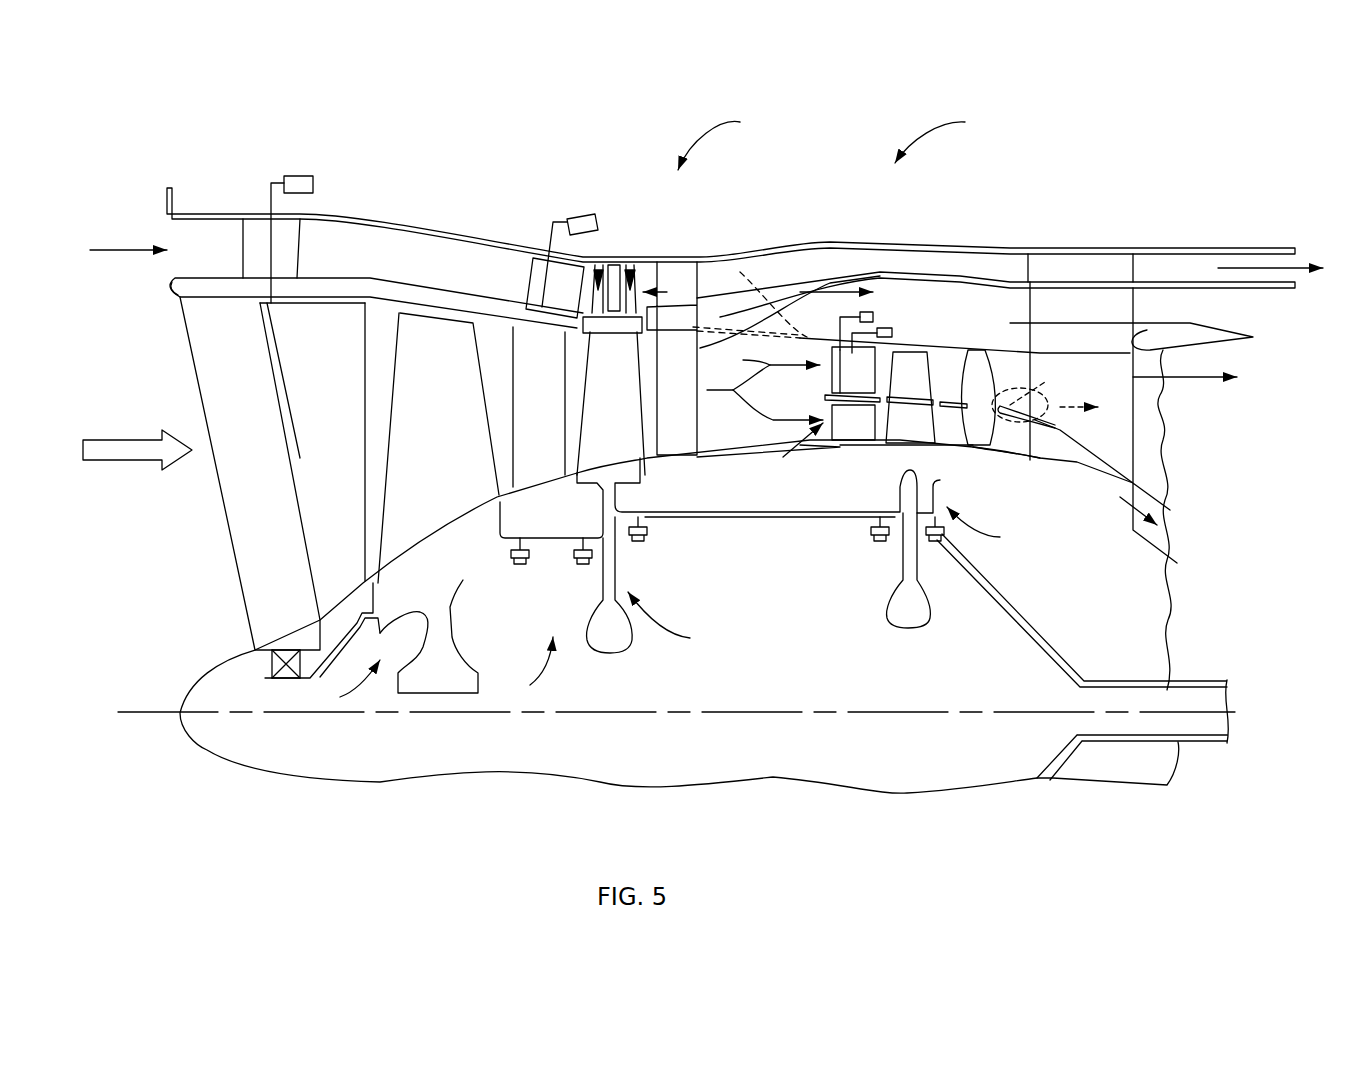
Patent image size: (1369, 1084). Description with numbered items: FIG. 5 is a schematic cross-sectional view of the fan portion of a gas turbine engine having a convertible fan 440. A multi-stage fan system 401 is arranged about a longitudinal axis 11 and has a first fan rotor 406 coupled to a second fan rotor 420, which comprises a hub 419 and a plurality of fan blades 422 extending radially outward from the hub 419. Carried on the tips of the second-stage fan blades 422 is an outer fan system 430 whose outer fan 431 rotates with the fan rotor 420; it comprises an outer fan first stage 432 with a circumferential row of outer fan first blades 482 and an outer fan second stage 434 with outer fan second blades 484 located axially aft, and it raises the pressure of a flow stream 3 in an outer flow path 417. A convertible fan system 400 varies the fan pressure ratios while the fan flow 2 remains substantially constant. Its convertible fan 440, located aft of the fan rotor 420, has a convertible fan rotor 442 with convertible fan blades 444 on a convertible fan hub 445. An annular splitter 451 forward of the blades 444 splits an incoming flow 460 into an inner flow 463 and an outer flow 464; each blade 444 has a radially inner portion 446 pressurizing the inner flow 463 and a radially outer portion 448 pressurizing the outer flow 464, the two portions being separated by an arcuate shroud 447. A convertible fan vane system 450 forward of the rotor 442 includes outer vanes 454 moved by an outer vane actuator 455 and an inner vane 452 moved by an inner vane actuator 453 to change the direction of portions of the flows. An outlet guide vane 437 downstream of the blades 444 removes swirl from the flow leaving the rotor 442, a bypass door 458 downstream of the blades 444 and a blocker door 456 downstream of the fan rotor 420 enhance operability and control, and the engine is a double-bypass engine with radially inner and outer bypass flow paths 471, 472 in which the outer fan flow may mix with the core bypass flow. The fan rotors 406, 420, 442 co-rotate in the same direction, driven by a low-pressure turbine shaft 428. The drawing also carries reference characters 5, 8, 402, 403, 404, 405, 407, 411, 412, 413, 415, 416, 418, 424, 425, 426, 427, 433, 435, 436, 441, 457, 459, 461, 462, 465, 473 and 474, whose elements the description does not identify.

The fan flow 2 is at (128, 452).
The flow stream 3 is at (130, 255).
The core exhaust flow 5 is at (1117, 497).
The bypass exhaust flow 8 is at (1256, 266).
The longitudinal axis 11 is at (148, 712).
The convertible fan system 400 is at (954, 134).
The multi-stage fan system 401 is at (520, 668).
The fan hub 402 is at (322, 645).
The fan shaft 403 is at (665, 585).
The forward casing 404 is at (560, 540).
The aft casing 405 is at (748, 518).
The first fan rotor 406 is at (420, 577).
The nacelle outlet 407 is at (1097, 246).
The fan blade 411 is at (230, 358).
The outlet guide vane 412 is at (393, 397).
The sensor 413 is at (292, 178).
The fan case leading edge 415 is at (180, 290).
The strut 416 is at (383, 343).
The outer flow path 417 is at (318, 240).
The fan section 418 is at (456, 470).
The hub 419 is at (608, 457).
The fan rotor 420 is at (608, 494).
The fan blades 422 is at (613, 428).
The frame 424 is at (605, 335).
The splitter 425 is at (730, 290).
The core engine 426 is at (1153, 463).
The fan case 427 is at (523, 343).
The low-pressure turbine shaft 428 is at (1200, 683).
The outer fan system 430 is at (733, 137).
The outer fan 431 is at (668, 292).
The outer fan first stage 432 is at (600, 265).
The second slot 433 is at (612, 265).
The outer fan second stage 434 is at (627, 275).
The actuator housing 435 is at (540, 270).
The actuator 436 is at (583, 220).
The outlet guide vane 437 is at (672, 278).
The convertible fan 440 is at (1001, 529).
The third stream duct 441 is at (900, 288).
The convertible fan rotor 442 is at (947, 500).
The convertible fan blades 444 is at (885, 448).
The convertible fan hub 445 is at (903, 475).
The radially inner portion 446 is at (943, 460).
The arcuate shroud 447 is at (943, 365).
The radially outer portion 448 is at (910, 370).
The convertible fan vane system 450 is at (835, 445).
The annular splitter 451 is at (827, 395).
The inner vane 452 is at (850, 443).
The inner vane actuator 453 is at (872, 315).
The outer vane 454 is at (863, 372).
The outer vane actuator 455 is at (890, 328).
The blocker door 456 is at (737, 283).
The rotor blade 457 is at (980, 383).
The bypass door 458 is at (1045, 387).
The flow direction 459 is at (1058, 405).
The incoming flow 460 is at (707, 390).
The exit flow 461 is at (1177, 377).
The inlet lip 462 is at (827, 277).
The inner flow 463 is at (780, 420).
The outer flow 464 is at (760, 367).
The splitter trailing edge 465 is at (1188, 333).
The radially inner bypass flow path 471 is at (1147, 393).
The radially outer bypass flow path 472 is at (843, 285).
The casing wall 473 is at (950, 443).
The stator vane 474 is at (947, 367).
The outer fan first blades 482 is at (590, 337).
The outer fan second blades 484 is at (633, 333).